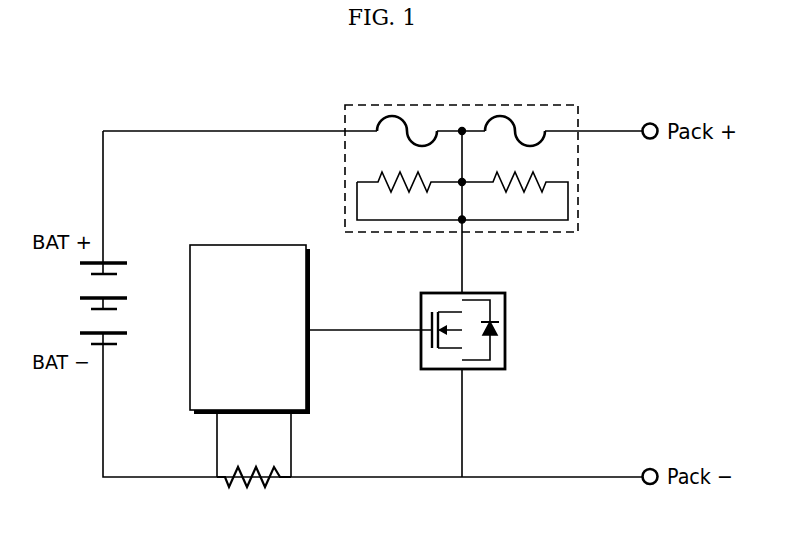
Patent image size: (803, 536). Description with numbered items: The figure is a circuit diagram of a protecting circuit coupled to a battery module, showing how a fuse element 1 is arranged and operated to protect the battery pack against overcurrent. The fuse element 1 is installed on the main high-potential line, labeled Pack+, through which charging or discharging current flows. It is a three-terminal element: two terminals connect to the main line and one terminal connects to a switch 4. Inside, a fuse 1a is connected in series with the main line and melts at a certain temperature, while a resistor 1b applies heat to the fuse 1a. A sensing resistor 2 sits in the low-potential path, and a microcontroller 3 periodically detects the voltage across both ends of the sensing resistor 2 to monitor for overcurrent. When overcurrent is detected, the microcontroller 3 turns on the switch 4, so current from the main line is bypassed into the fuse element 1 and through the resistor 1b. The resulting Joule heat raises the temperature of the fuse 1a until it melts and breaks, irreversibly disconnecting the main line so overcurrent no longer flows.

The fuse element 1 is at (548, 104).
The fuse 1a is at (390, 116).
The resistor 1b is at (400, 192).
The sensing resistor 2 is at (250, 488).
The microcontroller 3 is at (249, 244).
The switch 4 is at (508, 330).